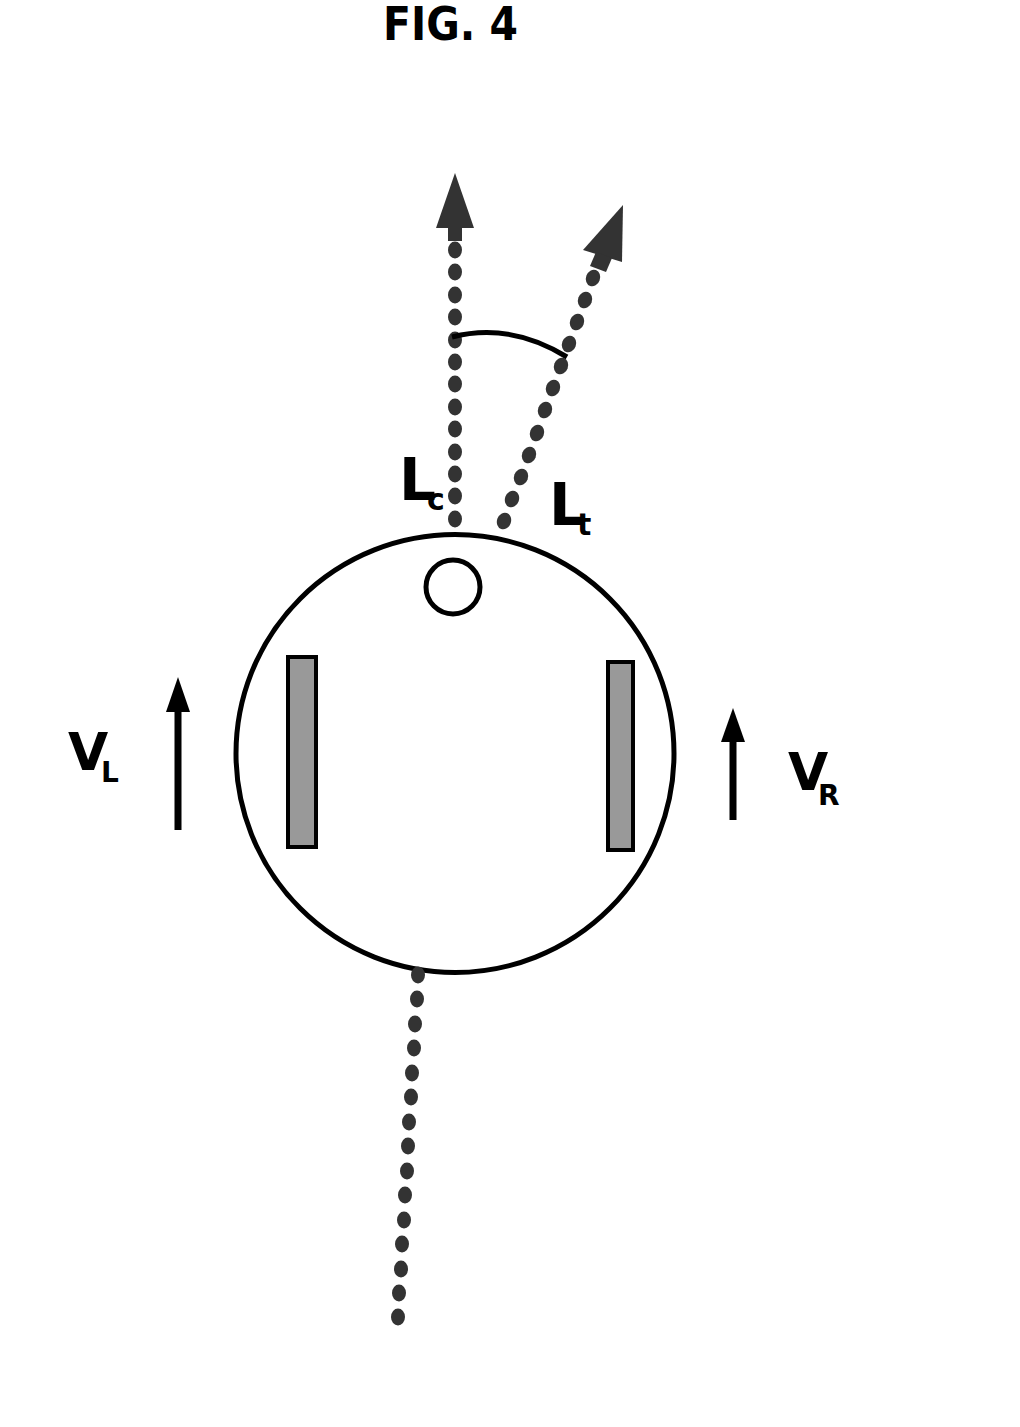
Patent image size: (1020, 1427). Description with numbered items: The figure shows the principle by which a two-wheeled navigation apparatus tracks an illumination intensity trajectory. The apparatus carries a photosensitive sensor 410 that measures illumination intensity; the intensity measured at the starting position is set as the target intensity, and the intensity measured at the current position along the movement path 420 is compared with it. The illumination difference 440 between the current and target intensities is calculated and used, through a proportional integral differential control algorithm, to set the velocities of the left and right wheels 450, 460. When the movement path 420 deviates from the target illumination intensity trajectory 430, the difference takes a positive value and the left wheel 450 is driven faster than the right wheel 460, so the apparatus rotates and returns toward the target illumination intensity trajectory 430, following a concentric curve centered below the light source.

The photosensitive sensor 410 is at (483, 592).
The movement path 420 is at (447, 388).
The target illumination intensity trajectory 430 is at (593, 313).
The illumination difference 440 is at (526, 265).
The left wheel 450 is at (288, 842).
The right wheel 460 is at (623, 833).